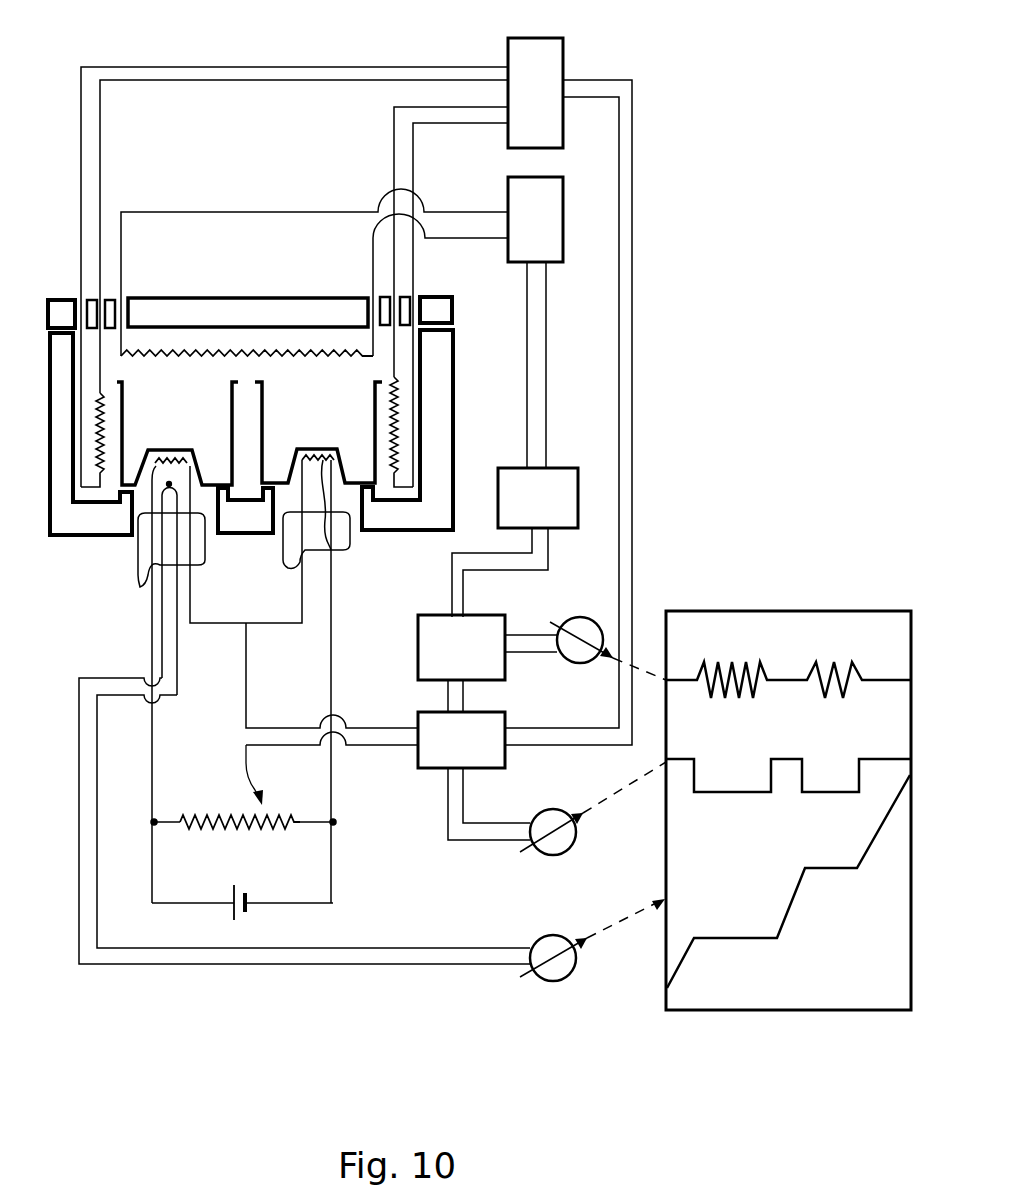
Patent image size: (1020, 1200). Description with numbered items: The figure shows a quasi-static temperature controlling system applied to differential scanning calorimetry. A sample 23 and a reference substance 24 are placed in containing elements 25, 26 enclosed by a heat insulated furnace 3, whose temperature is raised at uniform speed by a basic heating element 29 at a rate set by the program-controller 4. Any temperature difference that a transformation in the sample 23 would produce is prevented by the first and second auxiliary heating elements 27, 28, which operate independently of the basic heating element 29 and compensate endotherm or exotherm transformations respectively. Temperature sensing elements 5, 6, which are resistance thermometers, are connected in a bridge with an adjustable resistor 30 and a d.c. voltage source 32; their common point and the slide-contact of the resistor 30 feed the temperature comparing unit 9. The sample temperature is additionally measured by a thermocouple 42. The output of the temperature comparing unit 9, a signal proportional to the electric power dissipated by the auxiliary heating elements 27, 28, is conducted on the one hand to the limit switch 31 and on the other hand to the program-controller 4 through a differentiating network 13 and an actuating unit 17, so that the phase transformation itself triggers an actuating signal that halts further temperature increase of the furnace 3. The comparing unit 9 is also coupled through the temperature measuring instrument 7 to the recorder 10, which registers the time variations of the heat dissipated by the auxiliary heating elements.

The heat insulated furnace 3 is at (76, 545).
The program-controller 4 is at (552, 205).
The temperature sensing element 5 is at (145, 548).
The temperature sensing element 6 is at (331, 552).
The temperature measuring instrument 7 is at (575, 657).
The temperature comparing unit 9 is at (418, 718).
The recorder 10 is at (733, 988).
The differentiating network 13 is at (437, 637).
The actuating unit 17 is at (562, 480).
The sample 23 is at (176, 420).
The reference substance 24 is at (320, 417).
The containing element 25 is at (157, 393).
The containing element 26 is at (294, 396).
The first auxiliary heating element 27 is at (100, 425).
The second auxiliary heating element 28 is at (403, 423).
The basic heating element 29 is at (165, 298).
The adjustable resistor 30 is at (232, 298).
The limit switch 31 is at (530, 57).
The d.c. voltage source 32 is at (247, 897).
The thermocouple 42 is at (160, 612).